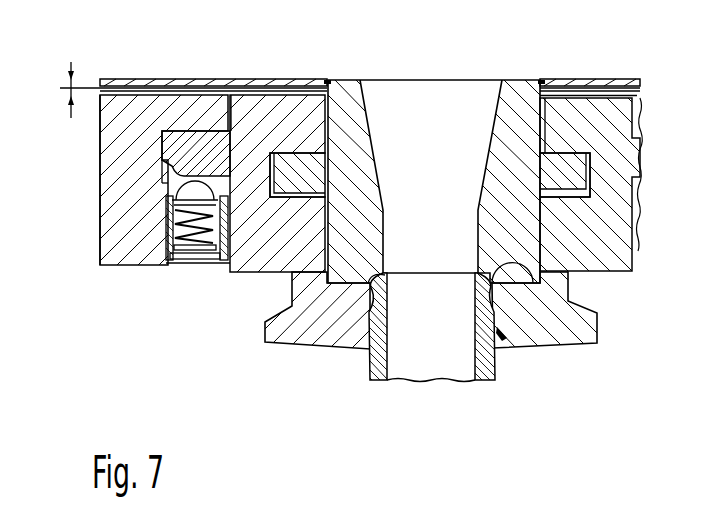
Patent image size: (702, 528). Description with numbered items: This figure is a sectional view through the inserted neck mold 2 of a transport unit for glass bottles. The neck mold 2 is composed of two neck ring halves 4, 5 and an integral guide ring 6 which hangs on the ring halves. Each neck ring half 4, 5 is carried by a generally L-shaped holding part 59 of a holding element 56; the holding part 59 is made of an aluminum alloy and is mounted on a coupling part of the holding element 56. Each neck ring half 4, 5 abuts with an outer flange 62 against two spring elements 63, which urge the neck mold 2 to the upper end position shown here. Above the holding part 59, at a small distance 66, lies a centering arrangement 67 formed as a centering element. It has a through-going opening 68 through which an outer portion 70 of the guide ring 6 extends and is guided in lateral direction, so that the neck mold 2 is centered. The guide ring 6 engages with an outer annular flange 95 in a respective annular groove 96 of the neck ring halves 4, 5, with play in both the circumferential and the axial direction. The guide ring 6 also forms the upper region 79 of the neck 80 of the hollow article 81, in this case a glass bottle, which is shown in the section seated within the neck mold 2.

The neck mold 2 is at (298, 358).
The neck ring half 4 is at (573, 273).
The neck ring half 5 is at (273, 318).
The guide ring 6 is at (358, 90).
The holding element 56 is at (95, 178).
The holding part 59 is at (100, 145).
The outer flange 62 is at (202, 138).
The spring element 63 is at (163, 207).
The small distance 66 is at (61, 90).
The centering arrangement 67 is at (180, 74).
The through-going opening 68 is at (331, 82).
The outer portion 70 is at (540, 82).
The upper region 79 is at (535, 338).
The neck 80 is at (504, 334).
The hollow article 81 is at (362, 372).
The outer annular flange 95 is at (283, 173).
The annular groove 96 is at (576, 172).